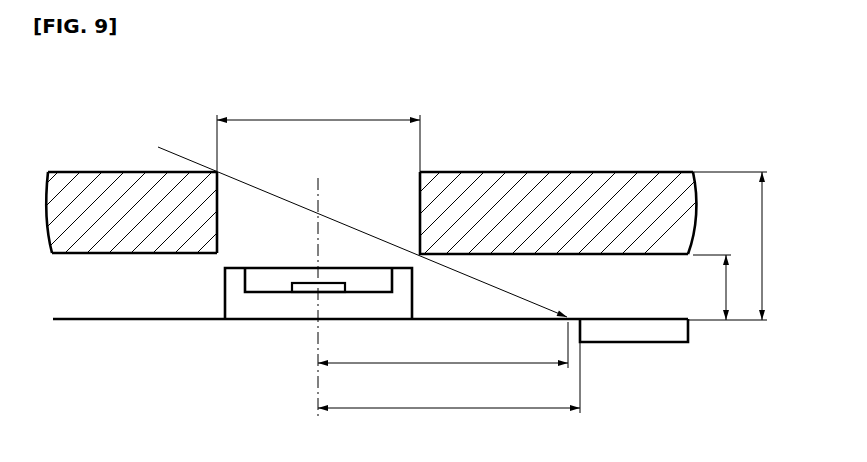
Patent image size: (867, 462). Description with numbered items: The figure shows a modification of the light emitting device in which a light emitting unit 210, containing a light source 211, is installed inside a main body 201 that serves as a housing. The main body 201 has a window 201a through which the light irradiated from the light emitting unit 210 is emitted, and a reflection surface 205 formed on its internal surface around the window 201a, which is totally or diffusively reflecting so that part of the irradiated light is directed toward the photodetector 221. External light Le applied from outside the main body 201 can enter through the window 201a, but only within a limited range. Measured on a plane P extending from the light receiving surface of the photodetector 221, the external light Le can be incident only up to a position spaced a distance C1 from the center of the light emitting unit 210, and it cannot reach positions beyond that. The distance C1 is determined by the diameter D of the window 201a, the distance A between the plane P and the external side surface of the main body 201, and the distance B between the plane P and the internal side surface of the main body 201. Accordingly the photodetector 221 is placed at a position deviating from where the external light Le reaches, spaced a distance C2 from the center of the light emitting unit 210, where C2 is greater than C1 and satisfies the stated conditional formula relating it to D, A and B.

The main body 201 is at (118, 202).
The window 201a is at (218, 208).
The reflection surface 205 is at (157, 257).
The light emitting unit 210 is at (272, 328).
The light source 211 is at (328, 283).
The photodetector 221 is at (658, 343).
The plane P is at (115, 317).
The external light Le is at (180, 157).
The diameter of the window D is at (318, 133).
The distance between the plane and the external side surface of the main body A is at (738, 246).
The distance between the plane and the internal side surface of the main body B is at (721, 287).
The distance C1 is at (443, 345).
The distance C2 is at (449, 377).